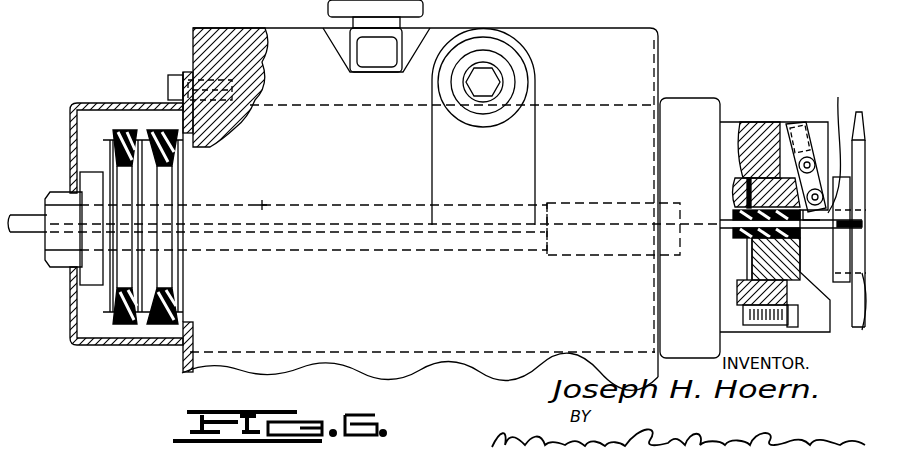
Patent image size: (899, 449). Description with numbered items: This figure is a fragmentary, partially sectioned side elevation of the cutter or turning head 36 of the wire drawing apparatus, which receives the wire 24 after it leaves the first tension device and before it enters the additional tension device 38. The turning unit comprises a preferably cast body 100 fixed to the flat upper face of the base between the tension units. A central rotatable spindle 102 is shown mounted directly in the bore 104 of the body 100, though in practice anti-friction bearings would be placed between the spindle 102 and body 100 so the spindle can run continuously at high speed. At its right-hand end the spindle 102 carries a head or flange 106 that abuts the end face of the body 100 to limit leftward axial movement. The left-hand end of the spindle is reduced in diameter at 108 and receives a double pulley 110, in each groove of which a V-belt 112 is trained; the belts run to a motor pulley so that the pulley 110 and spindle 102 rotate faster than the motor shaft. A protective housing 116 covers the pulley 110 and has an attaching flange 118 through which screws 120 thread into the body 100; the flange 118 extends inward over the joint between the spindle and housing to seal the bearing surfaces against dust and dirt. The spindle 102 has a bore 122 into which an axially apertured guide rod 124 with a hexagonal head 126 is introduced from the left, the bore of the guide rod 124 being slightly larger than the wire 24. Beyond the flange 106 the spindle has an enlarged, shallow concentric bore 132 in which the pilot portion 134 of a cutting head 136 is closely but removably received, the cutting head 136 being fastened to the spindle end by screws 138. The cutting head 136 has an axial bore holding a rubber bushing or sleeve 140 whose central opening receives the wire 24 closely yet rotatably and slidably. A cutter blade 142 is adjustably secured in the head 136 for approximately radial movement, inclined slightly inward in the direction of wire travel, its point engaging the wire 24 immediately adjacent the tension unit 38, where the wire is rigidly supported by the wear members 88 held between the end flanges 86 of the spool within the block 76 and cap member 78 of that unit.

The wire 24 is at (20, 238).
The turning head 36 is at (640, 27).
The tension device 38 is at (830, 333).
The block 76 is at (848, 331).
The cap member 78 is at (858, 112).
The end flanges 86 is at (824, 145).
The wear member 88 is at (840, 232).
The body 100 is at (230, 368).
The spindle 102 is at (218, 125).
The bore 104 is at (235, 100).
The flange 106 is at (688, 98).
The reduced diameter portion 108 is at (187, 173).
The double pulley 110 is at (163, 200).
The V-belt 112 is at (157, 328).
The protective housing 116 is at (105, 103).
The attaching flange 118 is at (184, 77).
The screws 120 is at (182, 72).
The bore 122 is at (315, 206).
The guide rod 124 is at (262, 205).
The hexagonal head 126 is at (60, 192).
The bore 132 is at (757, 275).
The pilot portion 134 is at (750, 182).
The cutting head 136 is at (790, 122).
The screws 138 is at (747, 315).
The rubber bushing 140 is at (757, 204).
The cutter blade 142 is at (827, 143).